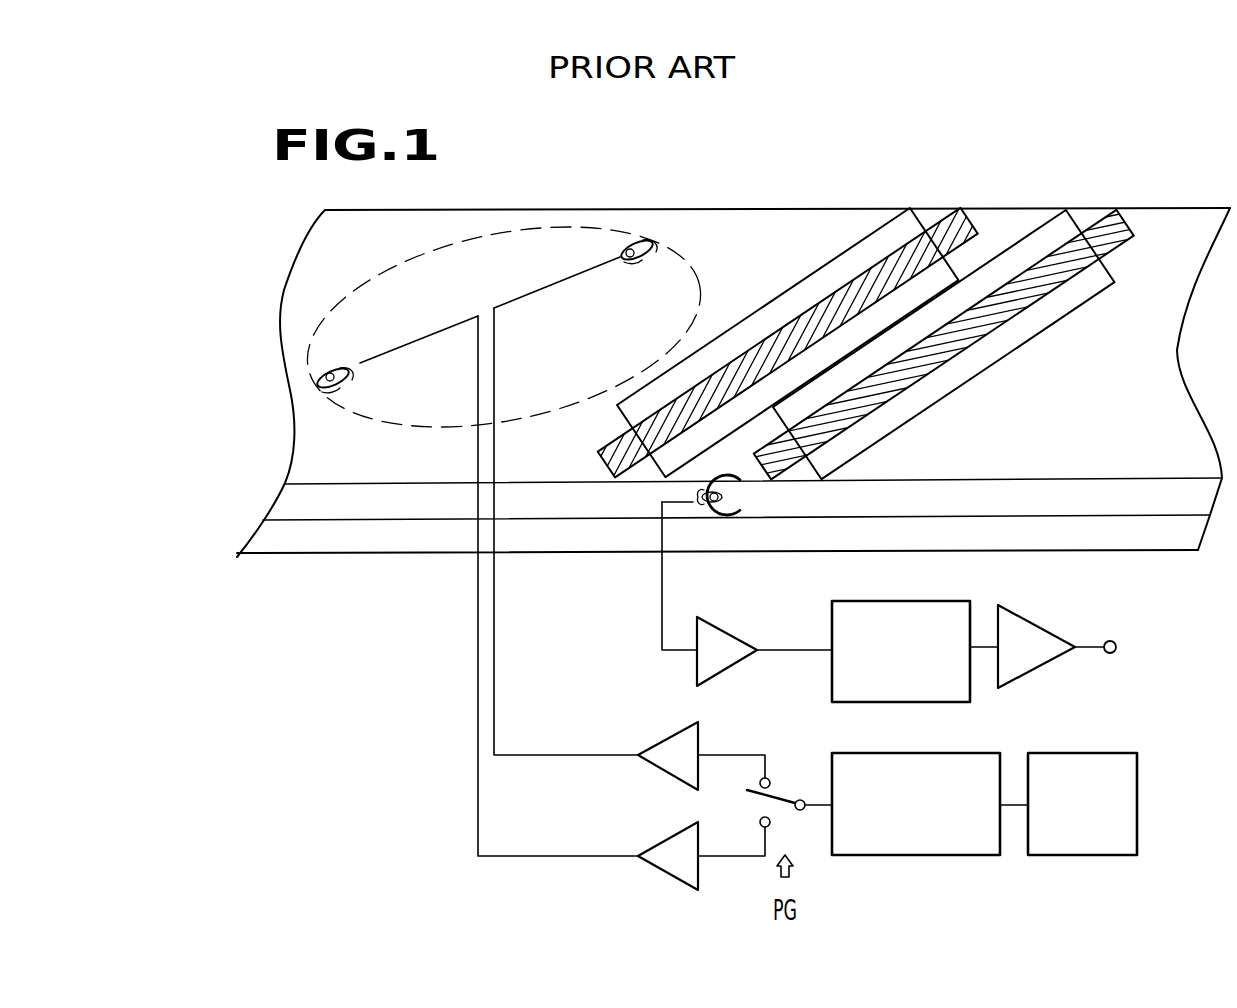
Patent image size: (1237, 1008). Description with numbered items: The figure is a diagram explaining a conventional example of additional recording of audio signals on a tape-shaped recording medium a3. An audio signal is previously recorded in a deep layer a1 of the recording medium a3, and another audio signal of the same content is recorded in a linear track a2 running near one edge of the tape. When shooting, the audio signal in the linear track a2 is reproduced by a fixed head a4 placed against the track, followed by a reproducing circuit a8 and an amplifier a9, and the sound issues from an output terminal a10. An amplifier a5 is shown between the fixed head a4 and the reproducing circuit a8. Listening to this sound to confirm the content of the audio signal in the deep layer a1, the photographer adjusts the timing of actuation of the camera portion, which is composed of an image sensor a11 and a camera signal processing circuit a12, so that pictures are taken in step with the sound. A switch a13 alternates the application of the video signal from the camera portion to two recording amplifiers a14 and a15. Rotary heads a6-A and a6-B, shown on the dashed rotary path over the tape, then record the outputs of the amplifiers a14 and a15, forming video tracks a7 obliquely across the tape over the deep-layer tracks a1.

The deep layer a1 is at (970, 212).
The linear track a2 is at (1103, 495).
The recording medium a3 is at (1152, 353).
The fixed head a4 is at (740, 518).
The reproducing amplifier a5 is at (697, 670).
The rotary head a6-A is at (320, 368).
The rotary head a6-B is at (640, 236).
The video tracks a7 is at (887, 232).
The reproducing circuit a8 is at (930, 601).
The amplifier a9 is at (1060, 626).
The output terminal a10 is at (1116, 647).
The image sensor a11 is at (1115, 855).
The camera signal processing circuit a12 is at (937, 855).
The switch a13 is at (782, 790).
The recording amplifier a14 is at (668, 777).
The recording amplifier a15 is at (668, 877).